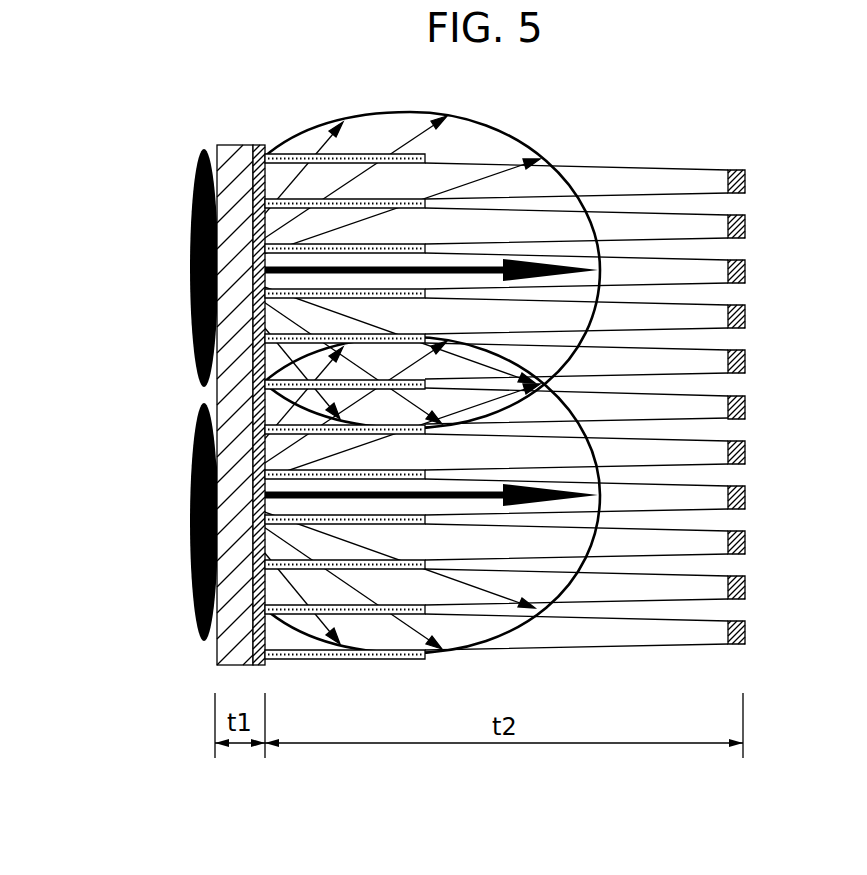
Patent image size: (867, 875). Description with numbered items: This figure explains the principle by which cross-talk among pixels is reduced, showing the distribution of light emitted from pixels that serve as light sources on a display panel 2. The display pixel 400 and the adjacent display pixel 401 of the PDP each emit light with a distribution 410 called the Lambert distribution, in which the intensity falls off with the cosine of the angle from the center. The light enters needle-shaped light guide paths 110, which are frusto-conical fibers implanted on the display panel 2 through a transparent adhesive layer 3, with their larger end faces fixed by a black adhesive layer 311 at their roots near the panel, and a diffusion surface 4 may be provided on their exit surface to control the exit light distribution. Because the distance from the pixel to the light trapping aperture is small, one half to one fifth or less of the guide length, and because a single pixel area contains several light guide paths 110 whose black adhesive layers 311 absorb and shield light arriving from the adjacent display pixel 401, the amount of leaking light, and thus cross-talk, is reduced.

The display panel 2 is at (235, 145).
The transparent adhesive layer 3 is at (257, 145).
The diffusion surface 4 is at (742, 170).
The needle-shaped light guide path 110 is at (607, 174).
The black adhesive layer 311 is at (332, 666).
The display pixel 400 is at (192, 272).
The adjacent display pixel 401 is at (192, 526).
The light distribution 410 is at (484, 130).